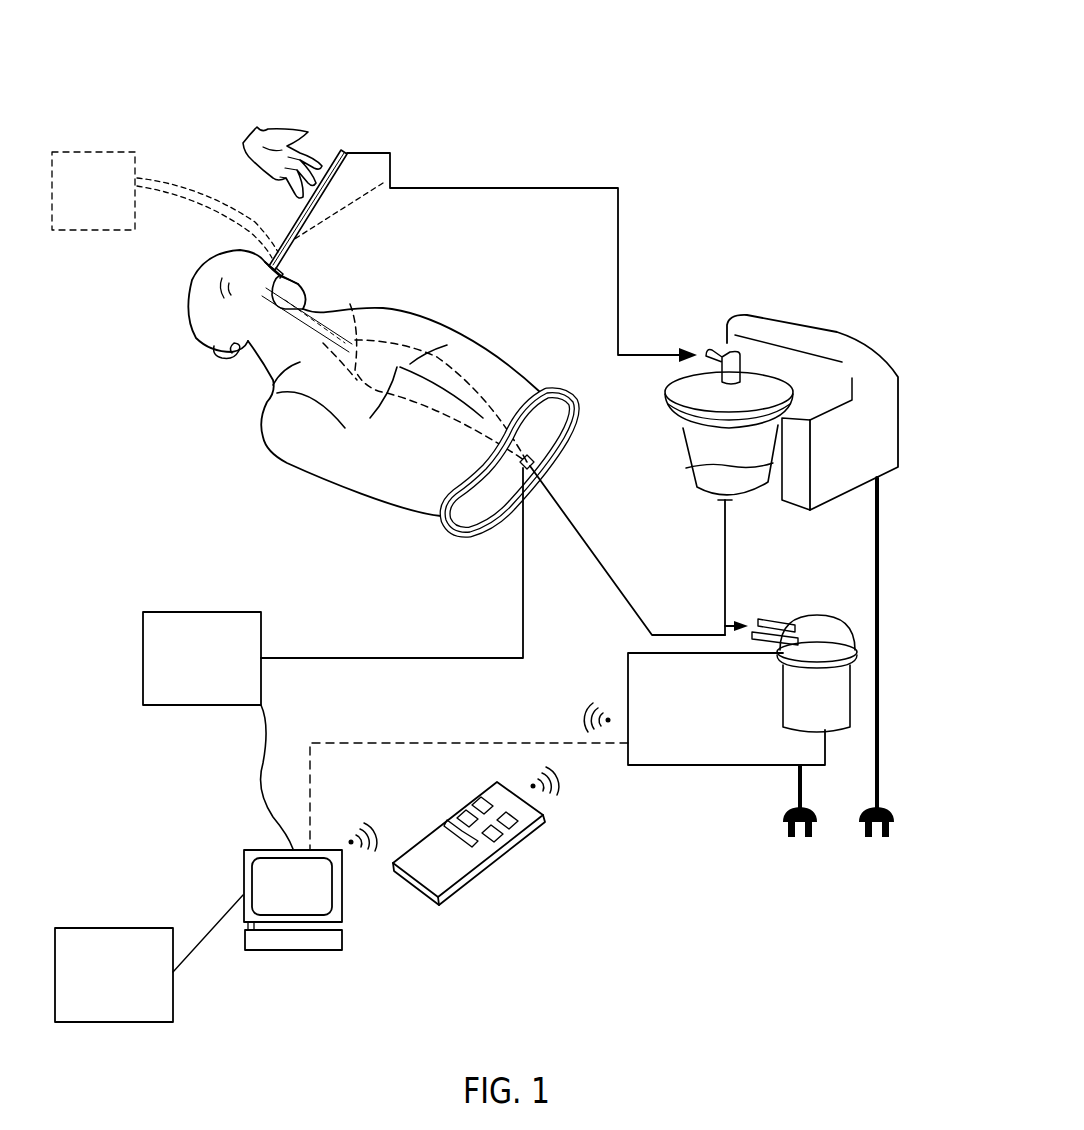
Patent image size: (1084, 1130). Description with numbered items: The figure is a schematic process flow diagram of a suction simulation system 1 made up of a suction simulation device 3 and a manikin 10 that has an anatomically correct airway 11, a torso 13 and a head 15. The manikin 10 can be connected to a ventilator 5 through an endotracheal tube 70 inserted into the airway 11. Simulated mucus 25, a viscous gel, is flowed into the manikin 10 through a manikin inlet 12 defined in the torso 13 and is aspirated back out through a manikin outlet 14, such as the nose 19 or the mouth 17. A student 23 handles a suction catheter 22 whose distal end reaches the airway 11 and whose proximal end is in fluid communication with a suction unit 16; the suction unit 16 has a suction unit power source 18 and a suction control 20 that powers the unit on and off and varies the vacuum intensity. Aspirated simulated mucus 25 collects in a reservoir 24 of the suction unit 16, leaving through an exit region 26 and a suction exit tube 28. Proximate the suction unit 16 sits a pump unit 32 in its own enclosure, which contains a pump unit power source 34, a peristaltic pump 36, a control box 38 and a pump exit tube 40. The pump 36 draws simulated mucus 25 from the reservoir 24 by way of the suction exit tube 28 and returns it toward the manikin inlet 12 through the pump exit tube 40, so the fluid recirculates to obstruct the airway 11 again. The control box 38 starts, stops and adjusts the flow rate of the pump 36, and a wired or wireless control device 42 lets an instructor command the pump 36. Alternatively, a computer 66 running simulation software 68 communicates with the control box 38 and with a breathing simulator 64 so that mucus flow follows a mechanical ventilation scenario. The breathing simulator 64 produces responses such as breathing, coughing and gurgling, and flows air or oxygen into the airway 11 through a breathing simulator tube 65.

The suction simulation system 1 is at (180, 91).
The suction simulation device 3 is at (897, 212).
The ventilator 5 is at (60, 232).
The manikin 10 is at (168, 272).
The airway 11 is at (394, 369).
The manikin inlet 12 is at (532, 394).
The torso 13 is at (287, 462).
The manikin outlet 14 is at (297, 262).
The head 15 is at (190, 345).
The suction unit 16 is at (896, 308).
The mouth 17 is at (330, 254).
The suction unit power source 18 is at (880, 633).
The nose 19 is at (270, 247).
The suction control 20 is at (898, 365).
The suction catheter 22 is at (297, 218).
The student 23 is at (283, 112).
The reservoir 24 is at (683, 457).
The simulated mucus 25 is at (705, 477).
The exit region 26 is at (720, 500).
The suction exit tube 28 is at (725, 543).
The pump unit 32 is at (706, 789).
The pump unit power source 34 is at (797, 800).
The pump 36 is at (837, 616).
The control box 38 is at (642, 770).
The pump exit tube 40 is at (638, 612).
The control device 42 is at (483, 870).
The breathing simulator 64 is at (195, 706).
The breathing simulator tube 65 is at (378, 660).
The computer 66 is at (247, 867).
The simulation software 68 is at (113, 1023).
The endotracheal tube 70 is at (383, 183).